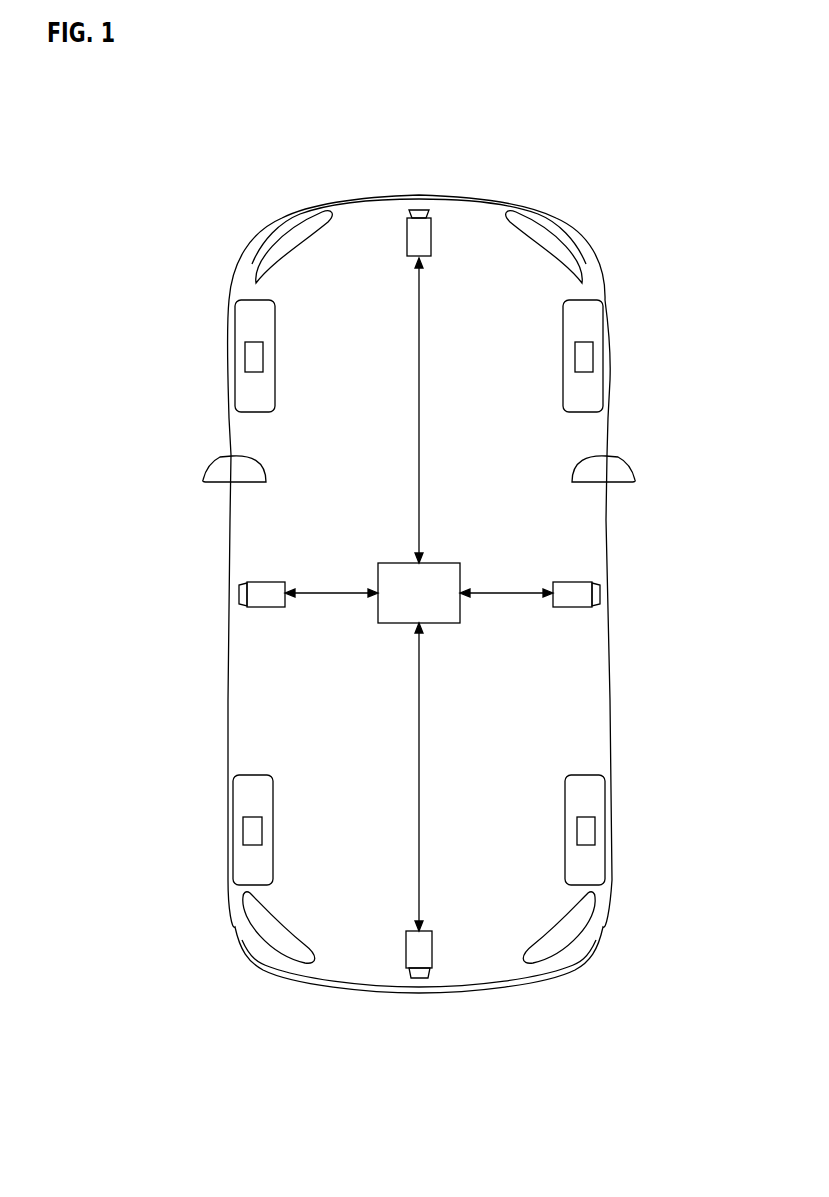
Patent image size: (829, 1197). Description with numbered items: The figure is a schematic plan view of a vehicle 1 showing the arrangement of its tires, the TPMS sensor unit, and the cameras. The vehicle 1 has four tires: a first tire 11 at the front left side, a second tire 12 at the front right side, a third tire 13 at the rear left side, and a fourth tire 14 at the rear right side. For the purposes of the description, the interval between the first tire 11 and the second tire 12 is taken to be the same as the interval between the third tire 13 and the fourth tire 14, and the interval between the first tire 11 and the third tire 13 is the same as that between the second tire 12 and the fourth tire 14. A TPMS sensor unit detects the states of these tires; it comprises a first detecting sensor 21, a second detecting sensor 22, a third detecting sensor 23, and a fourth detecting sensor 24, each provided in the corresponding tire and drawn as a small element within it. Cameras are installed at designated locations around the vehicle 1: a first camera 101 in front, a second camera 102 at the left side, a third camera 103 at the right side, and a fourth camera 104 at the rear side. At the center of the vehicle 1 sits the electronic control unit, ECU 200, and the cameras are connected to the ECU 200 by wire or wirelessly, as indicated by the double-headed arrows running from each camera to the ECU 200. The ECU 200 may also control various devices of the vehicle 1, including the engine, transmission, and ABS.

The vehicle 1 is at (197, 138).
The first tire 11 is at (236, 323).
The second tire 12 is at (595, 301).
The third tire 13 is at (234, 797).
The fourth tire 14 is at (593, 776).
The first detecting sensor 21 is at (245, 358).
The second detecting sensor 22 is at (594, 352).
The third detecting sensor 23 is at (243, 835).
The fourth detecting sensor 24 is at (596, 825).
The first camera 101 is at (421, 210).
The second camera 102 is at (265, 607).
The third camera 103 is at (577, 581).
The fourth camera 104 is at (433, 950).
The electronic control unit (ECU) 200 is at (445, 563).